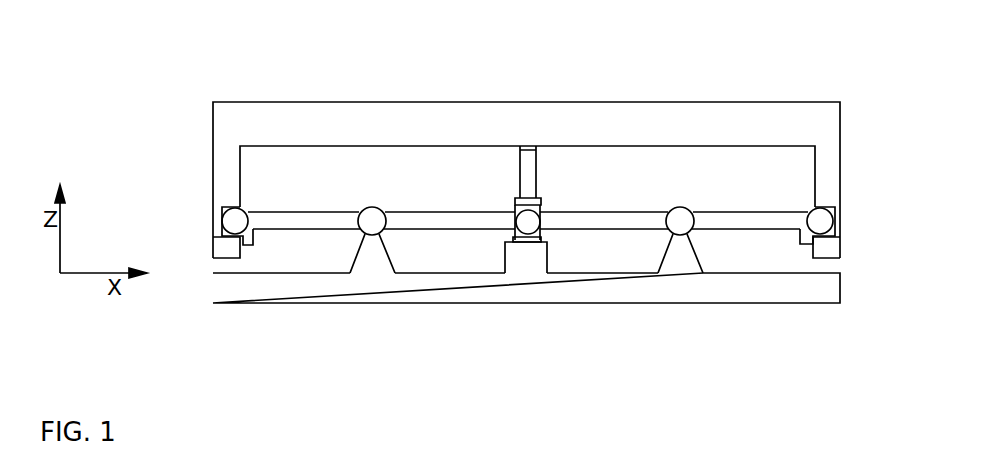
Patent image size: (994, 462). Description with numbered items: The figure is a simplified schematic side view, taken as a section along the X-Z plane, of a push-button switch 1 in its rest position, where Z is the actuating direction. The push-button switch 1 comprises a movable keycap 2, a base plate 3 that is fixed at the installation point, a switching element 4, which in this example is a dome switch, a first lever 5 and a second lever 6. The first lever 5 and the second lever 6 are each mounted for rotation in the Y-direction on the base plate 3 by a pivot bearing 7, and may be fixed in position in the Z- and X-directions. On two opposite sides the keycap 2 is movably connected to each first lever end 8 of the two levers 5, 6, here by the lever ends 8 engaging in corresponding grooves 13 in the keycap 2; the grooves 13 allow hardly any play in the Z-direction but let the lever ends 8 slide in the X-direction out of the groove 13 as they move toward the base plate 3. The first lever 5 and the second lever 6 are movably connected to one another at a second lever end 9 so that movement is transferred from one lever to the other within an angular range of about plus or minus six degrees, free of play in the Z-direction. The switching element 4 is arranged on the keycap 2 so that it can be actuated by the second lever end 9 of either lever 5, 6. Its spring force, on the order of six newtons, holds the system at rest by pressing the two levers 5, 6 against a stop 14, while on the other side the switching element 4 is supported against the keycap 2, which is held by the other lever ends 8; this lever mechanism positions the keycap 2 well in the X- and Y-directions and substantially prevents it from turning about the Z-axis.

The push-button switch 1 is at (770, 83).
The keycap 2 is at (428, 102).
The base plate 3 is at (302, 301).
The switching element 4 is at (534, 169).
The first lever 5 is at (403, 228).
The second lever 6 is at (712, 228).
The pivot bearing 7 is at (363, 209).
The first lever end 8 is at (235, 222).
The second lever end 9 is at (518, 222).
The groove 13 is at (222, 237).
The stop 14 is at (548, 257).